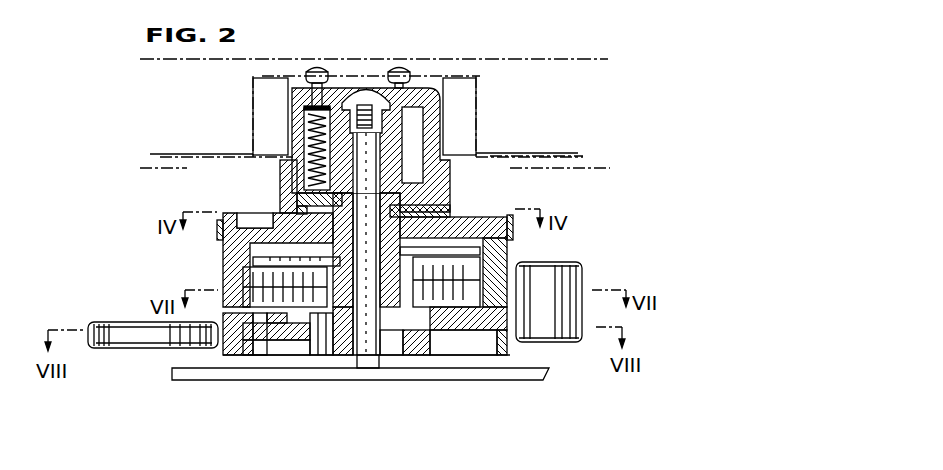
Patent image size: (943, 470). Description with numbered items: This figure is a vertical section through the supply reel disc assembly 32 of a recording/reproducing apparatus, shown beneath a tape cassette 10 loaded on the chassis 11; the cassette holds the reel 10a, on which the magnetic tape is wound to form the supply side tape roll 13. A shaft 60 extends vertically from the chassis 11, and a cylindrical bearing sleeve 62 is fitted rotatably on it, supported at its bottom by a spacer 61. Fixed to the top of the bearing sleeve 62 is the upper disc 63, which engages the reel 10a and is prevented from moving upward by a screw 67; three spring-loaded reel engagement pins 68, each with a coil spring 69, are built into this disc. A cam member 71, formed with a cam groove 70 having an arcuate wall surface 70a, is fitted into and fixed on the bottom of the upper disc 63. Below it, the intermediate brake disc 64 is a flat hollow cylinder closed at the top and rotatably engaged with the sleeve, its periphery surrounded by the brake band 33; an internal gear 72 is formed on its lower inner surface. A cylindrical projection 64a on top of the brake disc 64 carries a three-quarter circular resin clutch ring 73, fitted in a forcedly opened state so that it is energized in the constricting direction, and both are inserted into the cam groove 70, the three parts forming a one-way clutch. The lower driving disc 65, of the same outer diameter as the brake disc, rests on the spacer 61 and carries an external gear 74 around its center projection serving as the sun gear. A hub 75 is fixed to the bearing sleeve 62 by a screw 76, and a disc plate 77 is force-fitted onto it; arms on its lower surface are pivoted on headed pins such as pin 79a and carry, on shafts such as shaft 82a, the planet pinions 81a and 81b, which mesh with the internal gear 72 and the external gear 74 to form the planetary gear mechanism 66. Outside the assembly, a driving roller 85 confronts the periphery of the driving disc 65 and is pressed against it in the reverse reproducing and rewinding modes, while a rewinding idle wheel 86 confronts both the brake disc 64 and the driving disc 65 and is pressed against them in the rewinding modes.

The tape cassette 10 is at (572, 58).
The reel 10a is at (556, 154).
The chassis 11 is at (512, 368).
The supply side tape roll 13 is at (480, 76).
The supply reel disc assembly 32 is at (483, 49).
The brake band 33 is at (514, 216).
The shaft 60 is at (362, 350).
The spacer 61 is at (398, 332).
The bearing sleeve 62 is at (423, 135).
The upper disc 63 is at (445, 117).
The brake disc 64 is at (228, 262).
The cylindrical projection 64a is at (420, 207).
The lower driving disc 65 is at (230, 350).
The planetary gear mechanism 66 is at (255, 350).
The screw 67 is at (375, 90).
The reel engagement pin 68 is at (312, 73).
The coil spring 69 is at (305, 128).
The cam groove 70 is at (300, 200).
The arcuate wall surface 70a is at (430, 214).
The cam member 71 is at (288, 193).
The internal gear 72 is at (470, 294).
The clutch ring 73 is at (242, 215).
The external gear 74 is at (306, 345).
The hub 75 is at (412, 333).
The screw 76 is at (330, 345).
The disc plate 77 is at (450, 250).
The pin 79a is at (250, 259).
The pinion 81a is at (240, 294).
The pinion 81b is at (455, 332).
The shaft 82a is at (272, 345).
The driving roller 85 is at (122, 347).
The rewinding idle wheel 86 is at (582, 276).